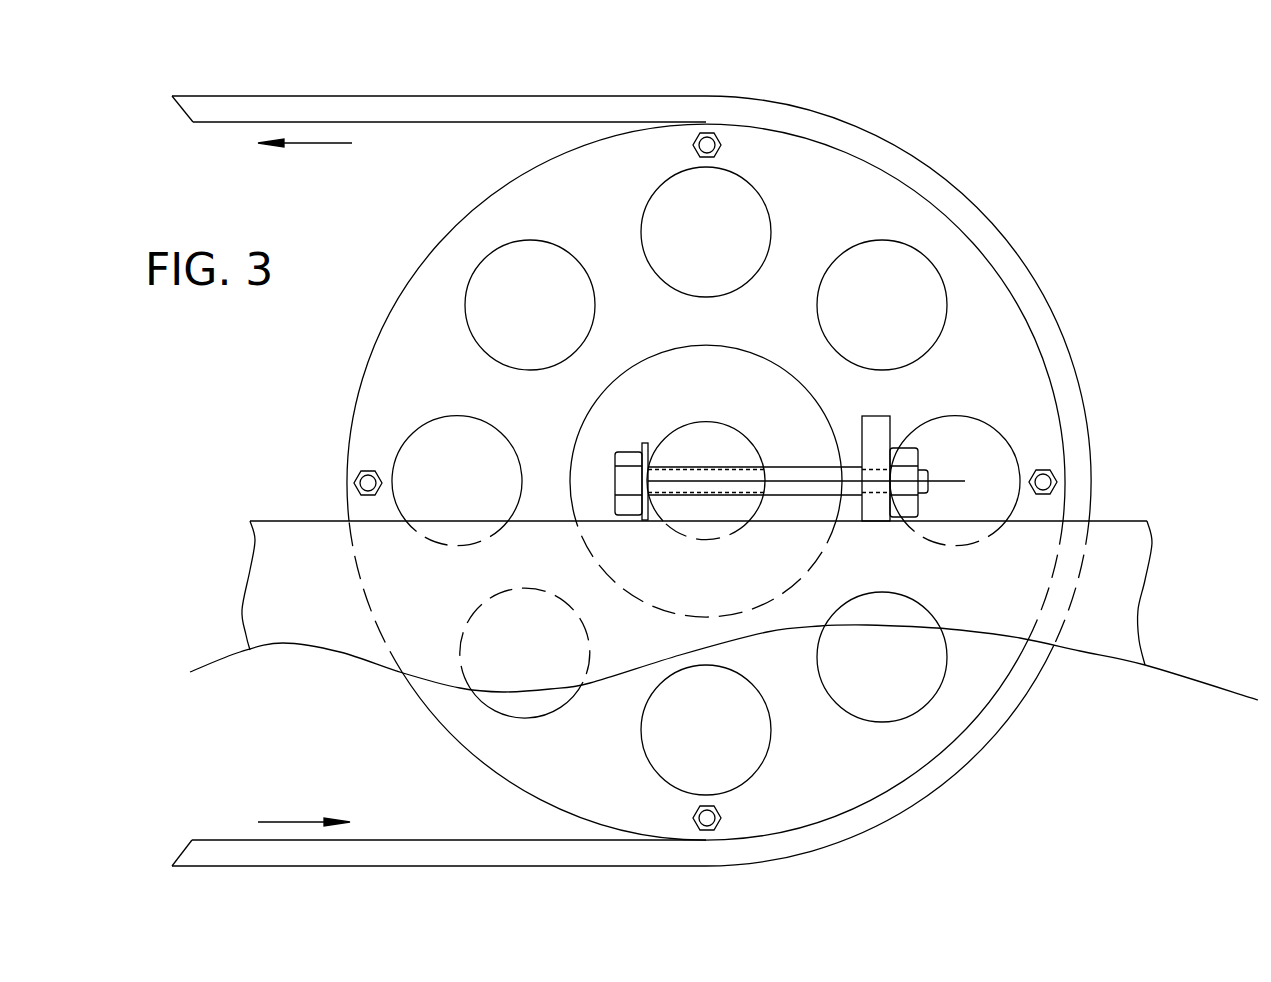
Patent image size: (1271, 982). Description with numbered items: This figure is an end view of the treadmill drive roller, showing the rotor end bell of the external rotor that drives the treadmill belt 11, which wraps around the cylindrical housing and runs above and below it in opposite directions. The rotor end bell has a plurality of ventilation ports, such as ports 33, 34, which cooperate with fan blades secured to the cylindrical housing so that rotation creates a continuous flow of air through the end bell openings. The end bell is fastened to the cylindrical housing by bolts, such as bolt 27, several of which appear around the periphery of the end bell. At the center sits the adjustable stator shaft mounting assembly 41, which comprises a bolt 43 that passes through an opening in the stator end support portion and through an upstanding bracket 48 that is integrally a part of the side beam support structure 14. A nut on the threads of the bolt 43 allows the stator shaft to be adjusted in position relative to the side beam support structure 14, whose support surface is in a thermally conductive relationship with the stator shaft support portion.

The treadmill belt 11 is at (612, 102).
The side beam support structure 14 is at (1128, 540).
The bolt 27 is at (713, 133).
The ventilation port 33 is at (730, 212).
The ventilation port 34 is at (733, 748).
The adjustable stator shaft mounting assembly 41 is at (631, 395).
The bolt 43 is at (625, 455).
The upstanding bracket 48 is at (880, 423).